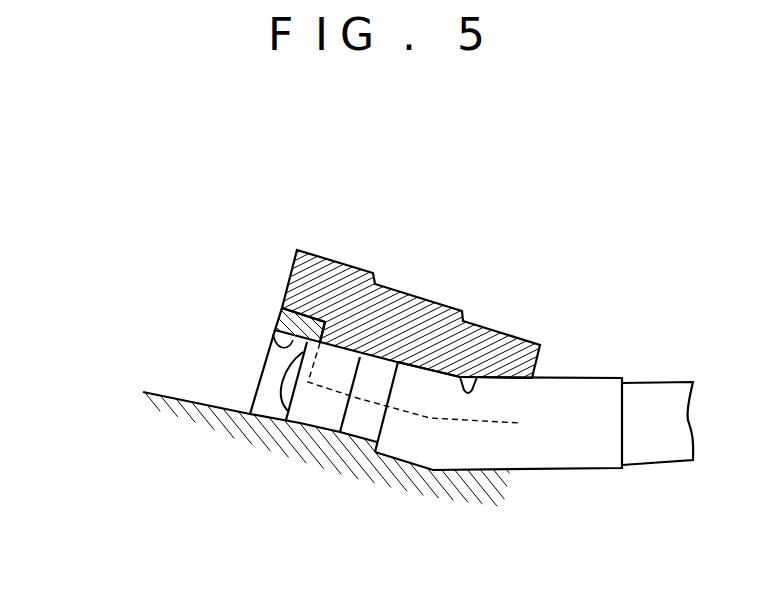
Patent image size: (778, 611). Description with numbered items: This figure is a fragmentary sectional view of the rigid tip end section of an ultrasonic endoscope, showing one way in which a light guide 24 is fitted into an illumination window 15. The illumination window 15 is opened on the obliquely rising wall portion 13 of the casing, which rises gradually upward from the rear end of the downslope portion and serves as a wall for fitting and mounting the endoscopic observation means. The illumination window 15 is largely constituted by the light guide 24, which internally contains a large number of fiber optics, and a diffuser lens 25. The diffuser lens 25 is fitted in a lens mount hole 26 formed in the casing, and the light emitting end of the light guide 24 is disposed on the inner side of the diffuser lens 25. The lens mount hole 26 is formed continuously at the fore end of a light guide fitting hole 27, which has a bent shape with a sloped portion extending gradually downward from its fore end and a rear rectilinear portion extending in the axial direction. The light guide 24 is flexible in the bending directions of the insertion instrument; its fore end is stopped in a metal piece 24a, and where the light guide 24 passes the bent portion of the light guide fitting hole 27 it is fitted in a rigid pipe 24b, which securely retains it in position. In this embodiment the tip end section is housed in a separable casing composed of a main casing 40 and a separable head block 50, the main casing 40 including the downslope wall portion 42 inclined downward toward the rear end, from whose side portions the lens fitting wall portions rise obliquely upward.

The illumination window 15 is at (220, 311).
The obliquely rising wall portion 13 is at (288, 283).
The separable head block 50 is at (325, 262).
The lens mount hole 26 is at (268, 333).
The diffuser lens 25 is at (273, 375).
The light guide fitting hole 27 is at (473, 390).
The light guide 24 is at (650, 405).
The metal piece 24a is at (322, 420).
The rigid pipe 24b is at (555, 398).
The main casing 40 is at (263, 433).
The downslope wall portion 42 is at (192, 402).